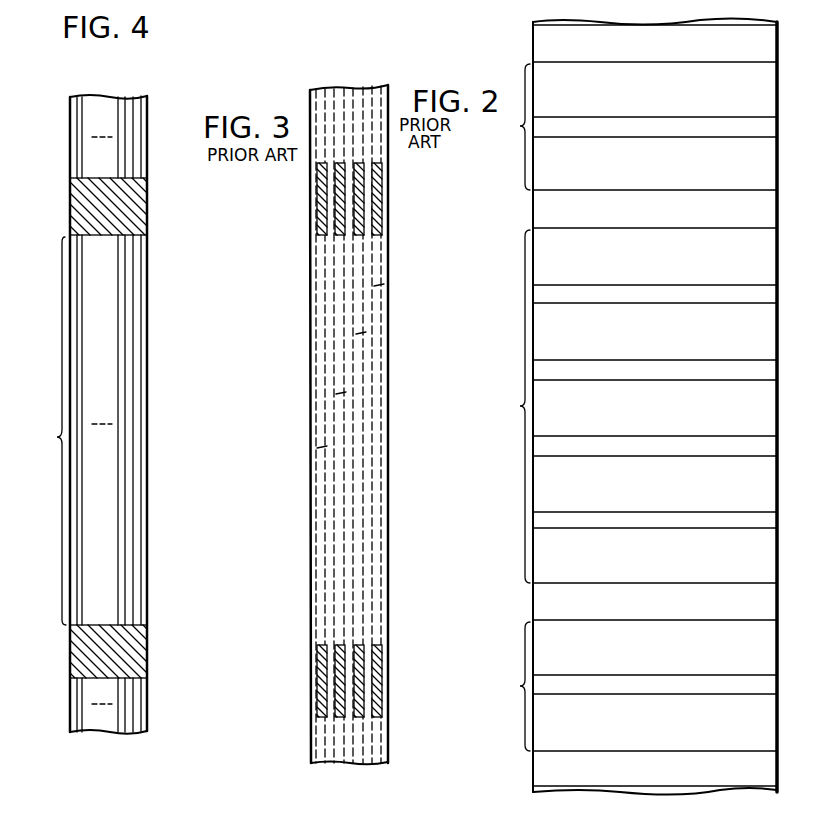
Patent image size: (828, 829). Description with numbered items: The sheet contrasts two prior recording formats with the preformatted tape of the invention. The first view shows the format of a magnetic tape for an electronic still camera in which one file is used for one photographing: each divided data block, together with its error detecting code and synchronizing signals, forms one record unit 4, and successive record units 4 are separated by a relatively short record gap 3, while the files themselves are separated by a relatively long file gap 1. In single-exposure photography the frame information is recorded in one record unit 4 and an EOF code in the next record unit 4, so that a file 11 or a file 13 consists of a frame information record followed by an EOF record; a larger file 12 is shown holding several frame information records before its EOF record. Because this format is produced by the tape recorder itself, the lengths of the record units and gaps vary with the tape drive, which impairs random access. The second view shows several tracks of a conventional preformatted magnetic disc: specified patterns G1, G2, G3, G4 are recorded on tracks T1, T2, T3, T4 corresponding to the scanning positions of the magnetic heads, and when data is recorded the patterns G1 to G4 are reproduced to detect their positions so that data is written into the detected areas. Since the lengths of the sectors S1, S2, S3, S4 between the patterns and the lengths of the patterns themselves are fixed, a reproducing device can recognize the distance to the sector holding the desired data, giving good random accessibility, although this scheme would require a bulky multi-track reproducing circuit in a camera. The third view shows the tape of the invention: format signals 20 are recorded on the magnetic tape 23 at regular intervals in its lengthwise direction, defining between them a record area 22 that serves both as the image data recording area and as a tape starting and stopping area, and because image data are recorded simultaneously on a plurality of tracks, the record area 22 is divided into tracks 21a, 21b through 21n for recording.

In FIG. 2, the file gap 1 is at (777, 47).
In FIG. 2, the record gap 3 is at (777, 130).
In FIG. 2, the record unit 4 is at (777, 94).
In FIG. 2, the file 11 is at (513, 127).
In FIG. 2, the second file 12 is at (509, 406).
In FIG. 2, the file 13 is at (509, 686).
In FIG. 3, the track T1 is at (379, 86).
In FIG. 3, the track T2 is at (356, 87).
In FIG. 3, the track T3 is at (337, 87).
In FIG. 3, the track T4 is at (318, 88).
In FIG. 3, the specified pattern G1 is at (379, 172).
In FIG. 3, the specified pattern G2 is at (362, 215).
In FIG. 3, the specified pattern G3 is at (322, 172).
In FIG. 3, the specified pattern G4 is at (322, 210).
In FIG. 3, the sector S1 is at (380, 285).
In FIG. 3, the sector S2 is at (360, 333).
In FIG. 3, the sector S3 is at (340, 393).
In FIG. 3, the sector S4 is at (320, 447).
In FIG. 4, the format signals 20 is at (147, 211).
In FIG. 4, the track 21a is at (138, 96).
In FIG. 4, the track 21b is at (121, 97).
In FIG. 4, the track 21n is at (78, 97).
In FIG. 4, the record area 22 is at (44, 431).
In FIG. 4, the magnetic tape 23 is at (148, 714).